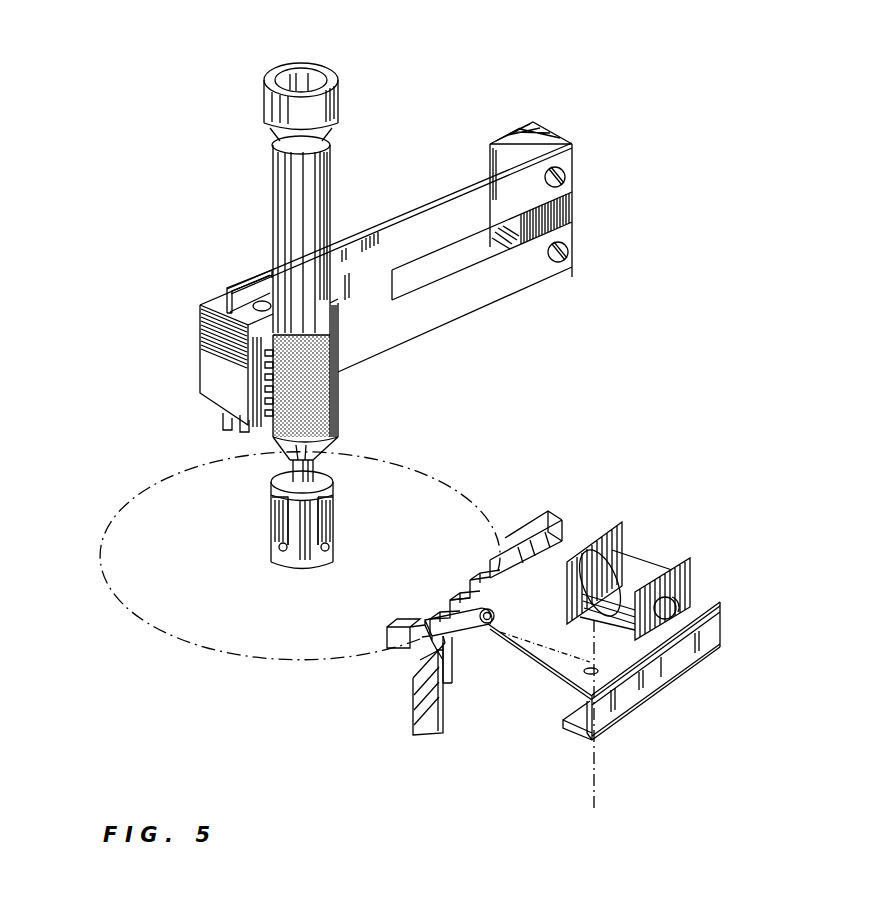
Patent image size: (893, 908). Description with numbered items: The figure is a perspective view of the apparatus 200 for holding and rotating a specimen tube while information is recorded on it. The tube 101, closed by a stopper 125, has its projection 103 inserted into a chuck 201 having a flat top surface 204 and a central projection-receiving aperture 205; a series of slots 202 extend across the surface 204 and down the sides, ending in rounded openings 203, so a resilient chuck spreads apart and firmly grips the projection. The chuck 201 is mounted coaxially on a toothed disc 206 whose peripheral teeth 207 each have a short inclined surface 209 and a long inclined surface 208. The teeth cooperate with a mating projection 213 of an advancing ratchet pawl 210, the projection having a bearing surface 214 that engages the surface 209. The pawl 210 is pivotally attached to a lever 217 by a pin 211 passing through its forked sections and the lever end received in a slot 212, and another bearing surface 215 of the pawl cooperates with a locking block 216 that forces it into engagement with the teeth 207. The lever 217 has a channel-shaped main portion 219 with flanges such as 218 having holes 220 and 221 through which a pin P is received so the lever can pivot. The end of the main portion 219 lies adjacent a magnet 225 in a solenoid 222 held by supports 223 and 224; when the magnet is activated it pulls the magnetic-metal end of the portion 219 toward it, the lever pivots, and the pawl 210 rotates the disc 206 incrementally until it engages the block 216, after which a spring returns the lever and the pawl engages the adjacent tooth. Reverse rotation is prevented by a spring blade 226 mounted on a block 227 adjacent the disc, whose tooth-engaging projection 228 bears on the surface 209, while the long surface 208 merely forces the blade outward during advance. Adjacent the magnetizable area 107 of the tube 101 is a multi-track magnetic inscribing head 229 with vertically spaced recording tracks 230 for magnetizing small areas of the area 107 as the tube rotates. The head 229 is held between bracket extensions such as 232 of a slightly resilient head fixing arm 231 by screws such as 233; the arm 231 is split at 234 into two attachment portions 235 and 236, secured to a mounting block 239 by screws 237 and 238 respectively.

The apparatus 200 is at (429, 26).
The stopper 125 is at (338, 103).
The tube 101 is at (340, 181).
The magnetizable area 107 is at (327, 397).
The projection 103 is at (325, 455).
The flat top surface 204 is at (280, 483).
The central projection receiving aperture 205 is at (333, 490).
The chuck 201 is at (273, 537).
The slots 202 is at (280, 508).
The rounded openings 203 is at (273, 548).
The toothed disc 206 is at (210, 610).
The multi-track magnetic inscribing head 229 is at (222, 373).
The recording tracks 230 is at (222, 417).
The bracket extensions 232 is at (200, 320).
The screws 233 is at (235, 287).
The head fixing arm 231 is at (392, 214).
The split 234 is at (447, 283).
The mounting block 239 is at (541, 134).
The attachment portion 235 is at (566, 165).
The screw 237 is at (565, 183).
The attachment portion 236 is at (569, 262).
The screw 238 is at (572, 244).
The spring blade 226 is at (557, 530).
The block 227 is at (552, 508).
The tooth-engaging projection 228 is at (493, 560).
The teeth 207 is at (478, 582).
The long inclined surface 208 is at (452, 600).
The short inclined surface 209 is at (392, 628).
The slot 212 is at (515, 657).
The advancing ratchet pawl 210 is at (485, 610).
The pin 211 is at (506, 621).
The mating projection 213 is at (405, 632).
The bearing surface 214 is at (425, 665).
The bearing surface 215 is at (450, 641).
The locking block 216 is at (428, 728).
The support 224 is at (618, 537).
The solenoid 222 is at (635, 562).
The support 223 is at (687, 578).
The magnet 225 is at (676, 607).
The lever 217 is at (560, 680).
The hole 220 is at (613, 717).
The main portion 219 is at (673, 660).
The hole 221 is at (565, 727).
The flange 218 is at (585, 740).
The pin P is at (601, 768).